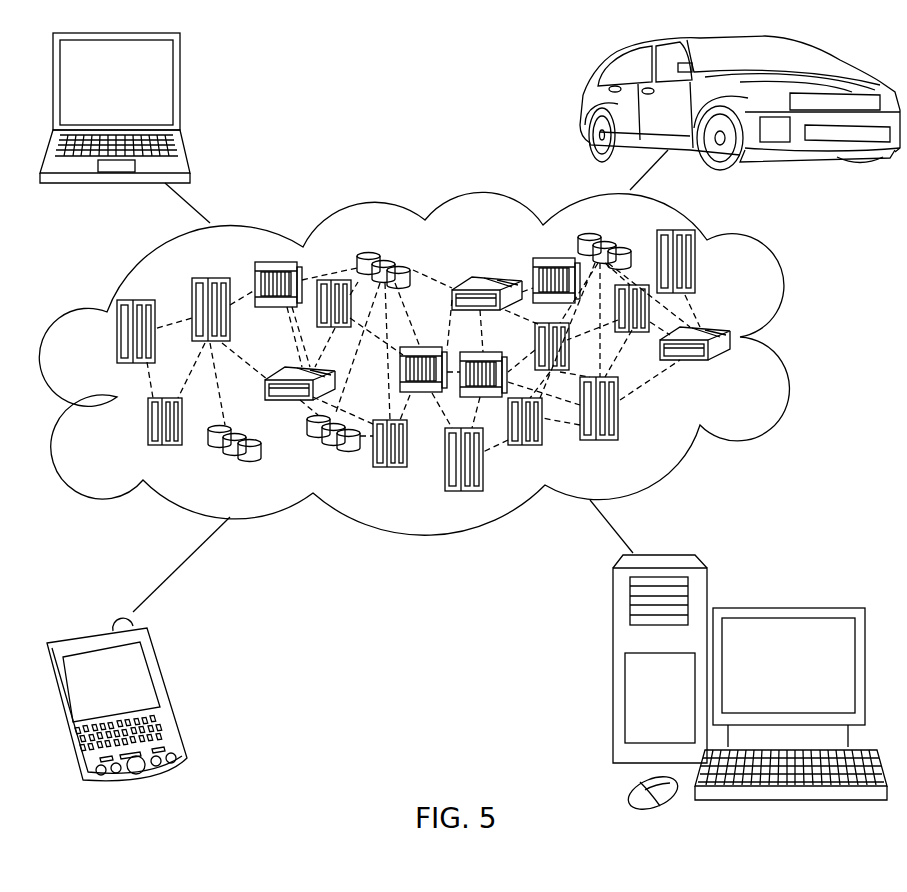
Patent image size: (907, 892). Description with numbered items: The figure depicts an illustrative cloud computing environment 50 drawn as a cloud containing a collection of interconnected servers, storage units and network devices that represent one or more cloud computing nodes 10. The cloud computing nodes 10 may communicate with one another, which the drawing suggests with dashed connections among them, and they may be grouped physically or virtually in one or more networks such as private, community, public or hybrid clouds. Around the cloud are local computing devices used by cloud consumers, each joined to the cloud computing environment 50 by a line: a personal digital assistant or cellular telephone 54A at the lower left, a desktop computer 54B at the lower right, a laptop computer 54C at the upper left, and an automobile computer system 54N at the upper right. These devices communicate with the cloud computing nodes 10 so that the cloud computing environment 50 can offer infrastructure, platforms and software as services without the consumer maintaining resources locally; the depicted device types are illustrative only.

The cloud computing environment 50 is at (436, 363).
The cloud computing node 10 is at (733, 370).
The personal digital assistant or cellular telephone 54A is at (170, 693).
The desktop computer 54B is at (786, 607).
The laptop computer 54C is at (180, 90).
The automobile computer system 54N is at (584, 102).